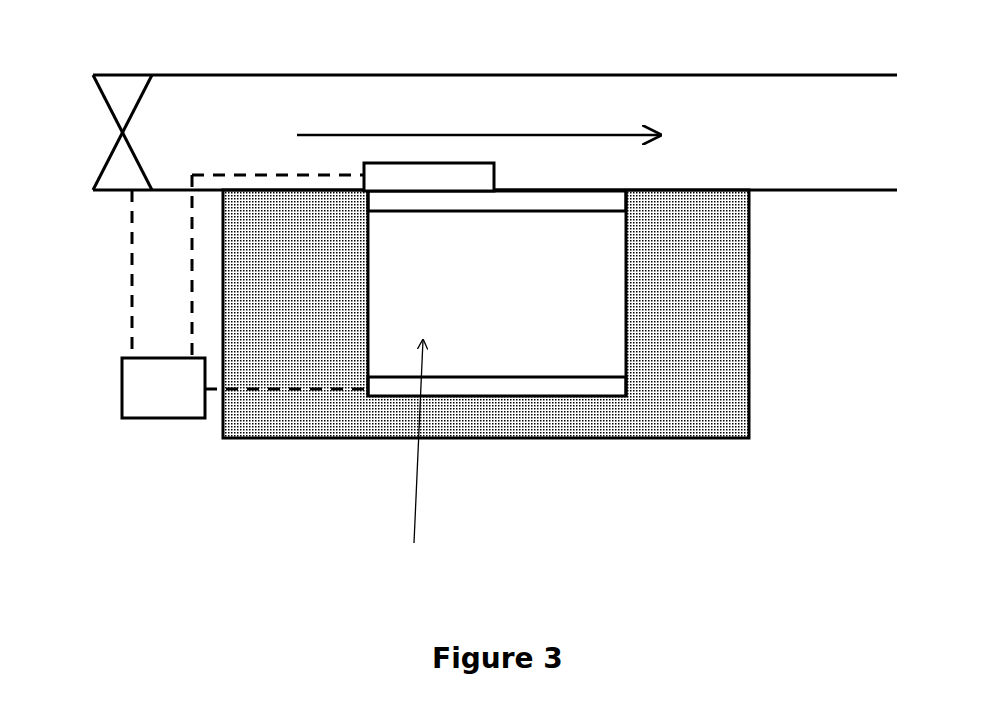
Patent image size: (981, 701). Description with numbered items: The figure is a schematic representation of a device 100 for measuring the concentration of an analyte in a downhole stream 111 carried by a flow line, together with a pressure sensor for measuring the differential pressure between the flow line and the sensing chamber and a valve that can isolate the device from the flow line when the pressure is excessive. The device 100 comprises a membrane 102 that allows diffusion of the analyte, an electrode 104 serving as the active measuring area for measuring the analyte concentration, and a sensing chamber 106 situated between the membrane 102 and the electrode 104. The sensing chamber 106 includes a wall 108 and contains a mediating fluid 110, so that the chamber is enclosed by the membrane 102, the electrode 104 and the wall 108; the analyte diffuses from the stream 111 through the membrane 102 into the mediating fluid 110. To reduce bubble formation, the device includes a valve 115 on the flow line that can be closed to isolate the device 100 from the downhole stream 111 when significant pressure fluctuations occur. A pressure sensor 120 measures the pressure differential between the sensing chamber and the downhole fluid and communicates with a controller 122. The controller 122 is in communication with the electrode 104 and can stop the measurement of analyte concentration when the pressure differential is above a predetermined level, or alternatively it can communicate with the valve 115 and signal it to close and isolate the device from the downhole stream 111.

The device 100 is at (760, 507).
The membrane 102 is at (598, 206).
The electrode 104 is at (572, 390).
The sensing chamber 106 is at (406, 460).
The wall 108 is at (316, 440).
The mediating fluid 110 is at (497, 293).
The stream 111 is at (445, 98).
The valve 115 is at (122, 193).
The pressure sensor 120 is at (432, 163).
The controller 122 is at (245, 296).